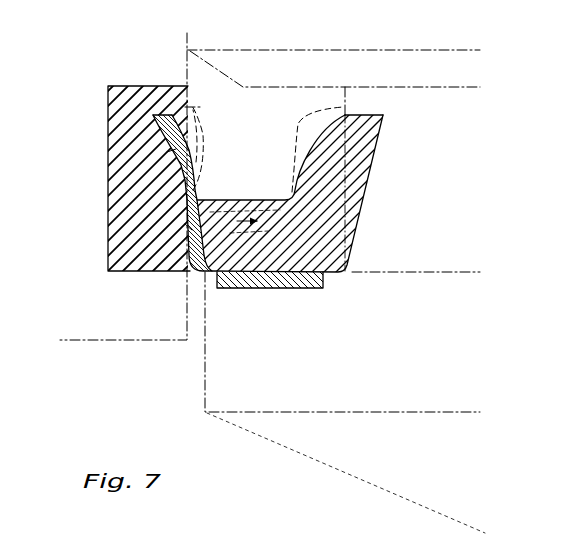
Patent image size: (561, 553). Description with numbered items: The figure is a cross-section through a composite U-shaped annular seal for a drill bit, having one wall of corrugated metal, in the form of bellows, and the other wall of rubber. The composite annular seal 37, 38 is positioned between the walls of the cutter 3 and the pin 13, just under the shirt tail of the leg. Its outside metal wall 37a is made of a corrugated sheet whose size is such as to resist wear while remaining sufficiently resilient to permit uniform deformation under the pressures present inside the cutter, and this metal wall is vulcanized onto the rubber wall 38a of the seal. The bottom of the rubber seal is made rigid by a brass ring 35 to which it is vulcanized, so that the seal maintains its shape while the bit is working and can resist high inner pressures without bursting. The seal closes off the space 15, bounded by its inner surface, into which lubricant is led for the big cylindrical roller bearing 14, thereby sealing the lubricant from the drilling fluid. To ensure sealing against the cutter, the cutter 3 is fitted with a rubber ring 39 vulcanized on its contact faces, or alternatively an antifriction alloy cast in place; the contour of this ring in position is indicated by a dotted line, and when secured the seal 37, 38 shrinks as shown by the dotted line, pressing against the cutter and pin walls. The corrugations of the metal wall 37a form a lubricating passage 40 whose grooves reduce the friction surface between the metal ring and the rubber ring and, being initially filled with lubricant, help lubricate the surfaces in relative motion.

The cutter 3 is at (157, 313).
The pin 13 is at (232, 328).
The big cylindrical roller bearing 14 is at (263, 63).
The space 15 is at (247, 170).
The brass ring 35 is at (277, 289).
The metal wall of composite annular seal 37 is at (185, 160).
The outside metal wall 37a is at (170, 113).
The rubber wall of composite annular seal 38 is at (288, 143).
The rubber wall of composite annular seal 38a is at (365, 134).
The rubber ring 39 is at (140, 262).
The lubricating passage 40 is at (187, 227).